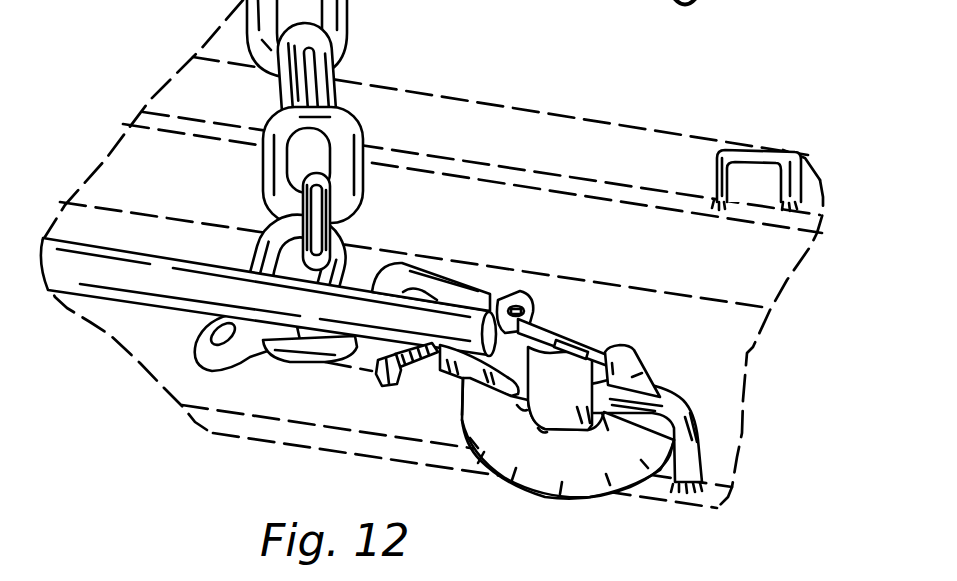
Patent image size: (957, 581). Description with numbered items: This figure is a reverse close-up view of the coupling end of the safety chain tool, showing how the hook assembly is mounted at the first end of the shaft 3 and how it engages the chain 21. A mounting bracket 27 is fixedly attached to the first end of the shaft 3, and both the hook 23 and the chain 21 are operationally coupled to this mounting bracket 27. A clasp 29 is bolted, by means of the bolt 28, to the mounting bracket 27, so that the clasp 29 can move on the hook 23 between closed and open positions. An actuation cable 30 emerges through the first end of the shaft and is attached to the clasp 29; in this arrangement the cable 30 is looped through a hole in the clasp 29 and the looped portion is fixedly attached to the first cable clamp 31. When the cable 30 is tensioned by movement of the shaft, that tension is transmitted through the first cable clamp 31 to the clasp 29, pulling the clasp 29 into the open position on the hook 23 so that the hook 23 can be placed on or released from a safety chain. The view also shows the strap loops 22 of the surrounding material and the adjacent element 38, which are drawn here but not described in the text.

The first end of the shaft 3 is at (169, 270).
The chain 21 is at (372, 184).
The tarp strap loop 22 is at (713, 160).
The hook 23 is at (590, 500).
The mounting bracket 27 is at (453, 393).
The bolt 28 is at (383, 382).
The clasp 29 is at (563, 335).
The actuation cable 30 is at (548, 311).
The first cable clamp 31 is at (562, 362).
The lug 38 is at (608, 350).